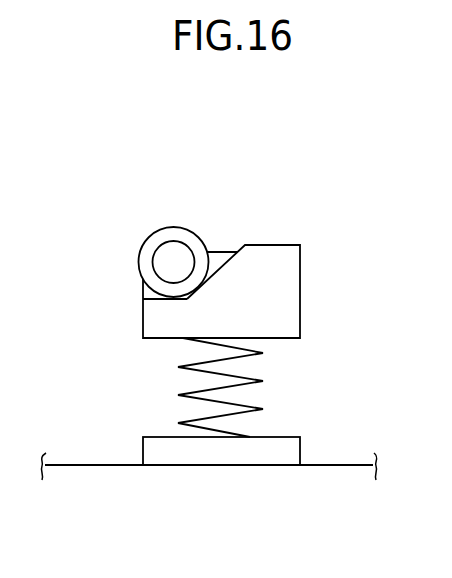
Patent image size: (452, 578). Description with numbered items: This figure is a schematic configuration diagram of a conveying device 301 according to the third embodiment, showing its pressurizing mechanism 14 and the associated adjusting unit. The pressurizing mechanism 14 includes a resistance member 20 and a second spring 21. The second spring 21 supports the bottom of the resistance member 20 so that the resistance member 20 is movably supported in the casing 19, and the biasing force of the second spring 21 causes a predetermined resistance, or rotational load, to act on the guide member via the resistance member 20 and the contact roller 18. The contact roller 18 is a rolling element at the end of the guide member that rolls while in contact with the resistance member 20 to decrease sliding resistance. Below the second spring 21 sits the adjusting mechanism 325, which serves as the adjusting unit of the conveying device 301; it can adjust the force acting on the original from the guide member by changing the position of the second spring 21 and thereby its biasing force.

The conveying device 301 is at (207, 110).
The pressurizing mechanism 14 is at (375, 268).
The contact roller 18 is at (173, 227).
The resistance member 20 is at (256, 254).
The second spring 21 is at (253, 369).
The adjusting mechanism 325 is at (300, 449).
The casing 19 is at (88, 467).